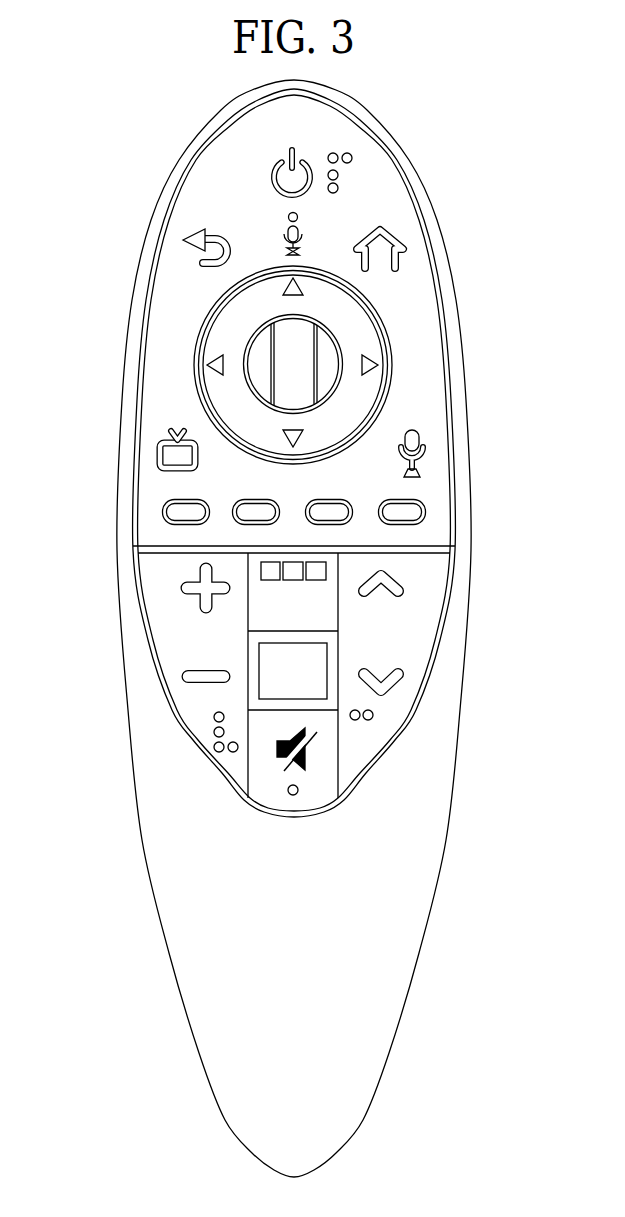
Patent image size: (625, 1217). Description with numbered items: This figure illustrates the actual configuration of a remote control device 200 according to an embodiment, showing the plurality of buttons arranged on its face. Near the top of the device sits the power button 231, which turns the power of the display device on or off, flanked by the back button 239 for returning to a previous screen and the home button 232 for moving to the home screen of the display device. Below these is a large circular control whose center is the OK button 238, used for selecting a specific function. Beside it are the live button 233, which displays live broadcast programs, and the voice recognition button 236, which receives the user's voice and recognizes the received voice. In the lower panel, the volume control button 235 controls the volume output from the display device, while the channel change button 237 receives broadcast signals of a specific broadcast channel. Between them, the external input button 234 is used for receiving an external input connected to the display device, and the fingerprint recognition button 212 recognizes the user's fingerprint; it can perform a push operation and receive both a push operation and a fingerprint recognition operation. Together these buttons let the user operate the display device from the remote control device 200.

The remote control device 200 is at (62, 114).
The fingerprint recognition button 212 is at (310, 700).
The power button 231 is at (310, 162).
The home button 232 is at (397, 232).
The live button 233 is at (155, 458).
The external input button 234 is at (305, 565).
The volume control button 235 is at (153, 651).
The voice recognition button 236 is at (427, 443).
The channel change button 237 is at (418, 622).
The OK button 238 is at (255, 346).
The back button 239 is at (190, 252).